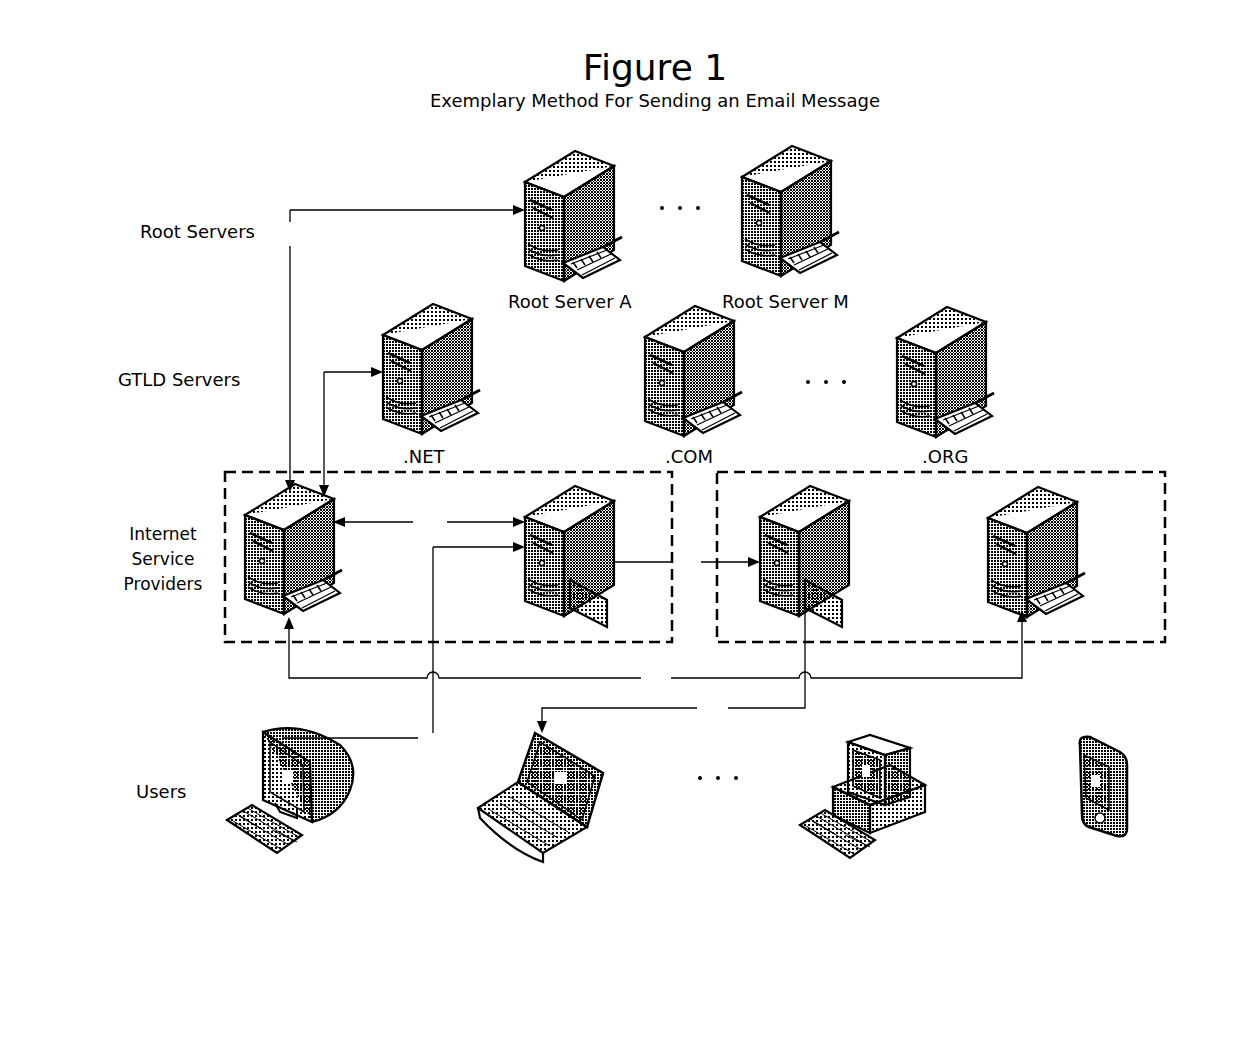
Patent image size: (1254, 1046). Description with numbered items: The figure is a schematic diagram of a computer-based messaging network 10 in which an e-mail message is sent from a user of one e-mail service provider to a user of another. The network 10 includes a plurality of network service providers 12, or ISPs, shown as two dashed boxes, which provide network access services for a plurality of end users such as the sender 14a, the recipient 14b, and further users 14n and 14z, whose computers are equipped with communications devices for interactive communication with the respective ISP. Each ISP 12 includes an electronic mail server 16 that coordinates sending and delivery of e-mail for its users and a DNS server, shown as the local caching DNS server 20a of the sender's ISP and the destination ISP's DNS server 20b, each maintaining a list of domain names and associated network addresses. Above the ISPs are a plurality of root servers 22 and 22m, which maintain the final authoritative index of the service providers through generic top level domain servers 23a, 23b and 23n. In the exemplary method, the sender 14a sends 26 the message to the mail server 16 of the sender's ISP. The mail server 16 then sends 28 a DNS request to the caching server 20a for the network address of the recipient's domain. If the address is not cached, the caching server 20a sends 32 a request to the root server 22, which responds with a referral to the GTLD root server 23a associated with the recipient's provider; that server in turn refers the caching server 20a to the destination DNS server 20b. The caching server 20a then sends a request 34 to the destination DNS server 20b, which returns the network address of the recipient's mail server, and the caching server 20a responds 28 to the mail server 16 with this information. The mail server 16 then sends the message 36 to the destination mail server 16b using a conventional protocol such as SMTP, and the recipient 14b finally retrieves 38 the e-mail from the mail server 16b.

The computer-based messaging network 10 is at (1008, 178).
The network service providers 12 is at (224, 508).
The end user (sender) 14a is at (352, 780).
The end user (recipient) 14b is at (603, 780).
The end user 14n is at (925, 780).
The end user 14z is at (1127, 778).
The electronic mail server 16 is at (613, 523).
The destination mail server 16b is at (850, 523).
The DNS caching server 20a is at (333, 561).
The destination DNS server 20b is at (1078, 523).
The root server 22 is at (612, 167).
The root server 22m is at (830, 167).
The GTLD root server 23a is at (472, 350).
The GTLD server 23b is at (733, 348).
The GTLD server 23n is at (985, 348).
The sending of message 26 is at (403, 649).
The DNS request and response 28 is at (429, 523).
The request to root server 32 is at (401, 351).
The request to destination DNS server 34 is at (655, 650).
The sending of message to destination mail server 36 is at (686, 563).
The retrieval of e-mail 38 is at (671, 670).